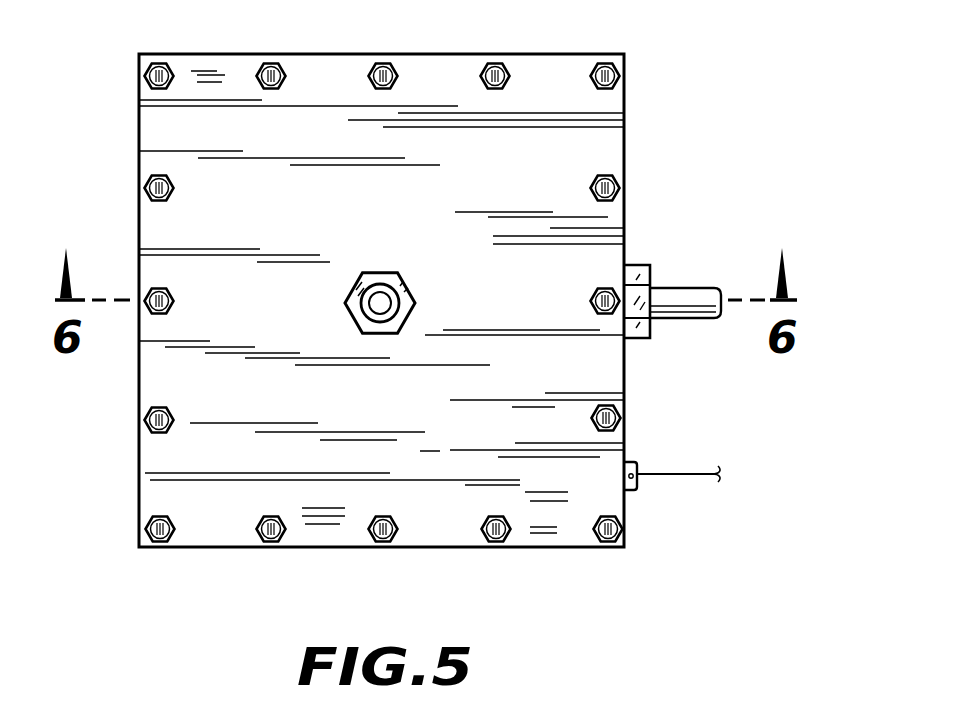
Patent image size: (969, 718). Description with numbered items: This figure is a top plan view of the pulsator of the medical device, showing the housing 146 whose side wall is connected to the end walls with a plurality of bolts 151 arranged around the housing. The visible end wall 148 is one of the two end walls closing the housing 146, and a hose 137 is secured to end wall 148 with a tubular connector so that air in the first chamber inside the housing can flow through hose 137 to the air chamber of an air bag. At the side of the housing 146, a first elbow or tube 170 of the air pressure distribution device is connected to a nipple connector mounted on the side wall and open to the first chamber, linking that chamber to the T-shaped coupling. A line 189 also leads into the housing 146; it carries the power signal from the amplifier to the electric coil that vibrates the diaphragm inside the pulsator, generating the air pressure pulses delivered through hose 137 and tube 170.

The housing 146 is at (215, 521).
The end wall 148 is at (162, 119).
The bolts 151 is at (272, 70).
The hose 137 is at (380, 290).
The first elbow or tube 170 is at (683, 293).
The line 189 is at (680, 478).